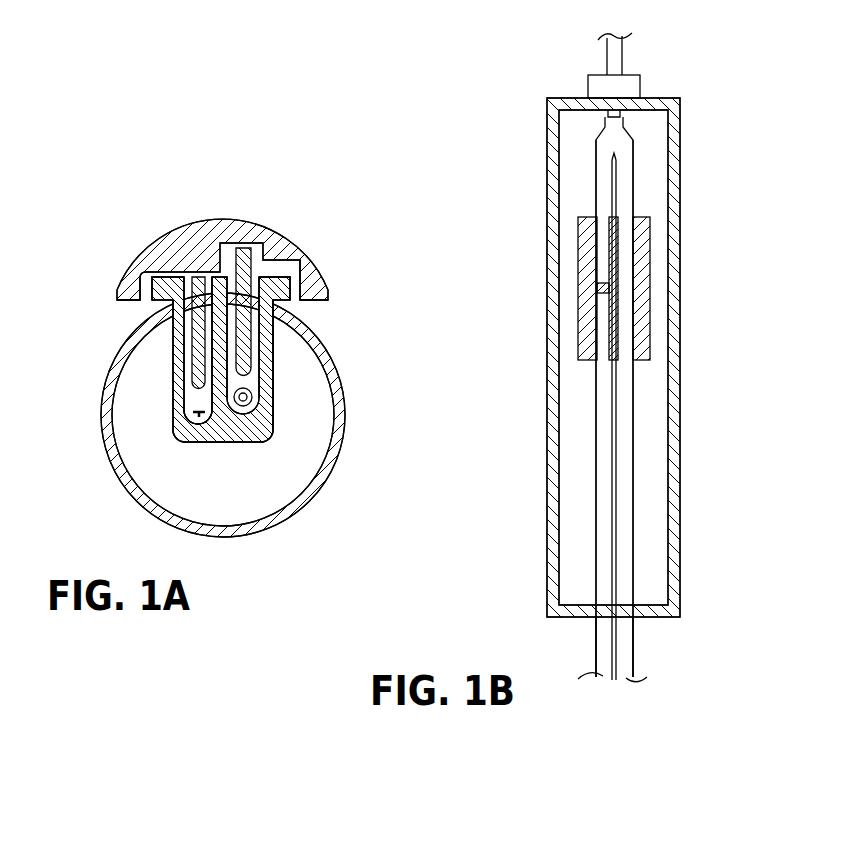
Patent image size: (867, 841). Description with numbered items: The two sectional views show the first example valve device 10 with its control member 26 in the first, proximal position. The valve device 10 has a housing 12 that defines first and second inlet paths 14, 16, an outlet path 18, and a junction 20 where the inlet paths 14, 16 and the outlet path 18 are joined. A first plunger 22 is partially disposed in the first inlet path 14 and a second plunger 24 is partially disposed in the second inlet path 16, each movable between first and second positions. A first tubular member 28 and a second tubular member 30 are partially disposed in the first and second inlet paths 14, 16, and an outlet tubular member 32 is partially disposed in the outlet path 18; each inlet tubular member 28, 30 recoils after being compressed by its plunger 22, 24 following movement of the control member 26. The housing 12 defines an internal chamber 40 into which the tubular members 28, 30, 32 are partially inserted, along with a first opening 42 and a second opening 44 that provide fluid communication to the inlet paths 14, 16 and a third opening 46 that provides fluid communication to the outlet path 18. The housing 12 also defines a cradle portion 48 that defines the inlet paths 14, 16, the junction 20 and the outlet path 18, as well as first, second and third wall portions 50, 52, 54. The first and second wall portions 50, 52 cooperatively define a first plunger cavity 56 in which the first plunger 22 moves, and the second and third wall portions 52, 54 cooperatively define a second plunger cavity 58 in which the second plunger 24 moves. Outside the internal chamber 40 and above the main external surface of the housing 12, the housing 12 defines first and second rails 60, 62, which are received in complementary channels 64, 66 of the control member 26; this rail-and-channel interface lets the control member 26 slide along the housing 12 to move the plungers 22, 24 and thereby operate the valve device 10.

In FIG. 1B, the valve device 10 is at (732, 242).
In FIG. 1A, the housing 12 is at (335, 370).
In FIG. 1B, the housing 12 is at (680, 313).
In FIG. 1A, the first inlet path 14 is at (188, 420).
In FIG. 1B, the first inlet path 14 is at (605, 375).
In FIG. 1A, the second inlet path 16 is at (270, 410).
In FIG. 1B, the second inlet path 16 is at (625, 378).
In FIG. 1B, the outlet path 18 is at (614, 120).
In FIG. 1B, the junction 20 is at (612, 147).
In FIG. 1A, the first plunger 22 is at (197, 362).
In FIG. 1B, the first plunger 22 is at (607, 288).
In FIG. 1A, the second plunger 24 is at (245, 322).
In FIG. 1A, the control member 26 is at (172, 232).
In FIG. 1A, the first tubular member 28 is at (187, 425).
In FIG. 1B, the first tubular member 28 is at (602, 665).
In FIG. 1A, the second tubular member 30 is at (243, 408).
In FIG. 1B, the second tubular member 30 is at (630, 665).
In FIG. 1B, the outlet tubular member 32 is at (617, 48).
In FIG. 1A, the internal chamber 40 is at (290, 485).
In FIG. 1B, the internal chamber 40 is at (570, 507).
In FIG. 1B, the first opening 42 is at (595, 620).
In FIG. 1B, the second opening 44 is at (633, 620).
In FIG. 1B, the third opening 46 is at (625, 80).
In FIG. 1A, the cradle portion 48 is at (170, 343).
In FIG. 1A, the first wall portion 50 is at (178, 385).
In FIG. 1B, the first wall portion 50 is at (597, 247).
In FIG. 1A, the second wall portion 52 is at (222, 405).
In FIG. 1B, the second wall portion 52 is at (608, 228).
In FIG. 1A, the third wall portion 54 is at (267, 378).
In FIG. 1B, the third wall portion 54 is at (650, 275).
In FIG. 1A, the first plunger cavity 56 is at (195, 415).
In FIG. 1A, the second plunger cavity 58 is at (252, 404).
In FIG. 1A, the first rail 60 is at (163, 278).
In FIG. 1A, the second rail 62 is at (283, 283).
In FIG. 1A, the channel 64 is at (142, 287).
In FIG. 1A, the channel 66 is at (310, 288).